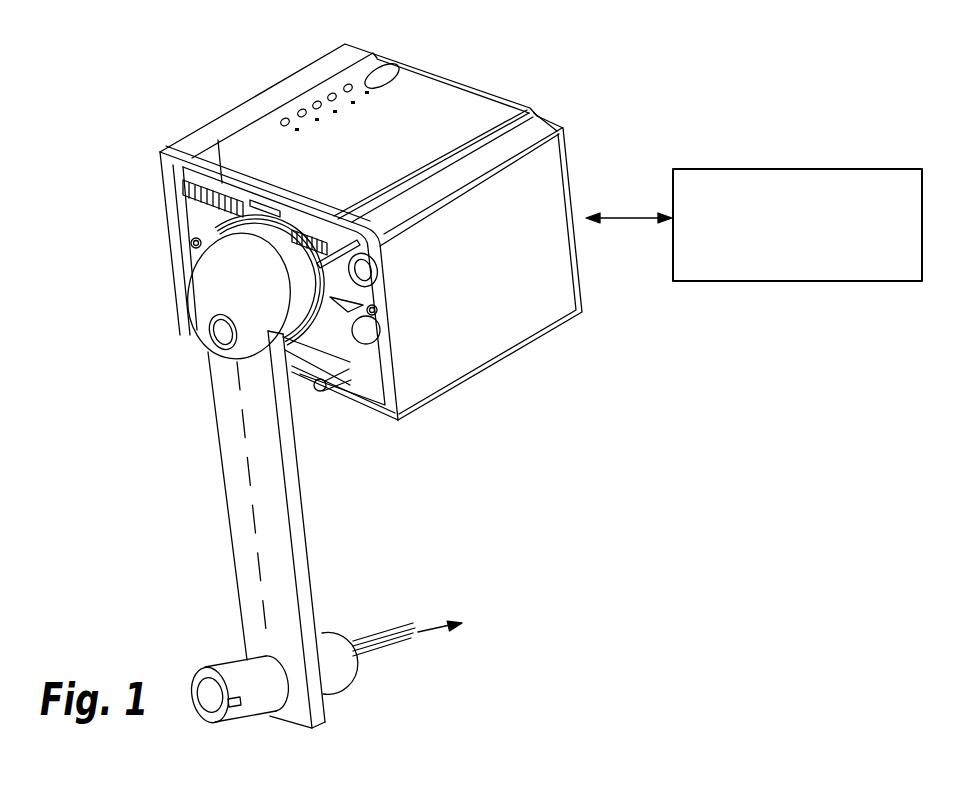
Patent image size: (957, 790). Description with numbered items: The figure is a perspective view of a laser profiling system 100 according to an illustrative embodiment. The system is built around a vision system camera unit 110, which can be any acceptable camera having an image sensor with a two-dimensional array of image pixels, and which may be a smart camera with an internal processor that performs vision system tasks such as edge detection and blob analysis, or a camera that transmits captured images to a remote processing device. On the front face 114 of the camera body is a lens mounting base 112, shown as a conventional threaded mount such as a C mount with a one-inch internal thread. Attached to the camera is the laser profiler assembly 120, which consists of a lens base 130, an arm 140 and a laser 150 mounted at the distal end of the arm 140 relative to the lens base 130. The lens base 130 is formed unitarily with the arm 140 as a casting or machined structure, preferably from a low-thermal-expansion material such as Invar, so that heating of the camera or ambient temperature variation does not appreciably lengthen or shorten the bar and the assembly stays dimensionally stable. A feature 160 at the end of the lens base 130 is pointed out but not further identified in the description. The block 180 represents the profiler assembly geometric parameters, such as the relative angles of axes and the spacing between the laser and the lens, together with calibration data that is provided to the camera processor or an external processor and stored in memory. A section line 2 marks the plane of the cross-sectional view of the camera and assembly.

The laser profiling system 100 is at (509, 52).
The vision system camera unit 110 is at (515, 332).
The lens mounting base 112 is at (322, 348).
The front face 114 is at (172, 256).
The laser profiler assembly 120 is at (210, 434).
The lens base 130 is at (207, 298).
The arm 140 is at (288, 512).
The laser 150 is at (333, 683).
The lens aperture / laser 160 is at (212, 349).
The profiler assembly geometric parameters and calibration data block 180 is at (773, 169).
The section line 2 is at (215, 112).